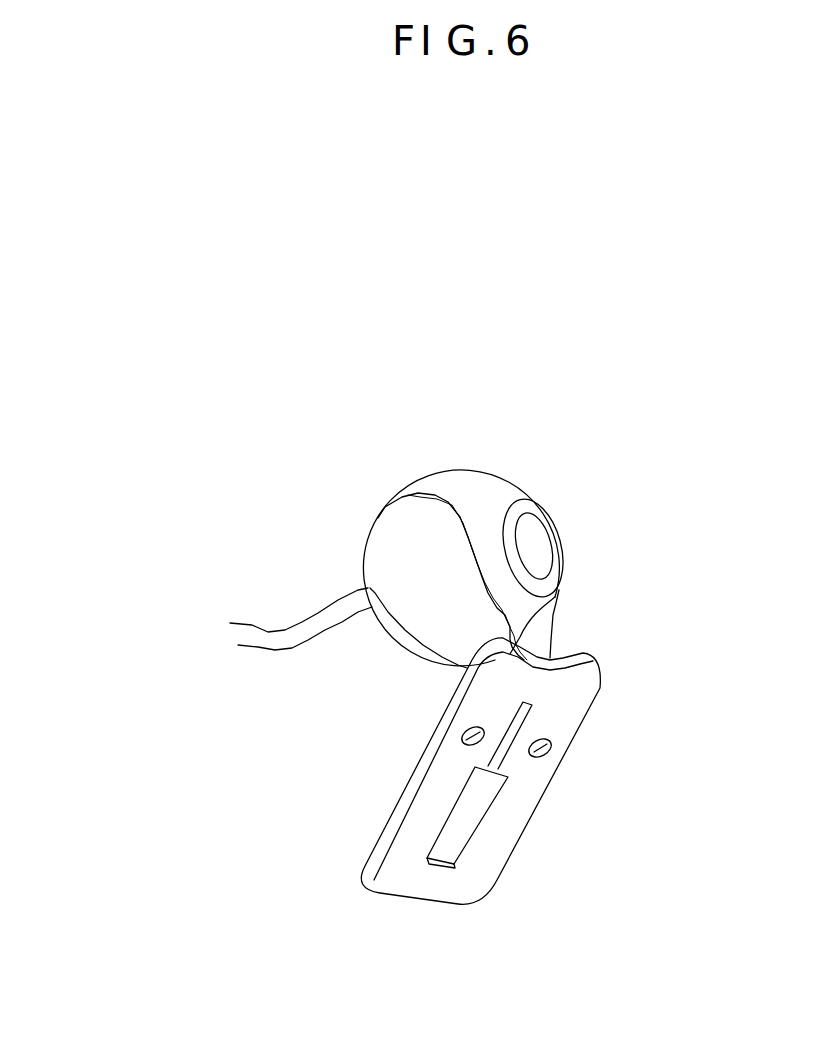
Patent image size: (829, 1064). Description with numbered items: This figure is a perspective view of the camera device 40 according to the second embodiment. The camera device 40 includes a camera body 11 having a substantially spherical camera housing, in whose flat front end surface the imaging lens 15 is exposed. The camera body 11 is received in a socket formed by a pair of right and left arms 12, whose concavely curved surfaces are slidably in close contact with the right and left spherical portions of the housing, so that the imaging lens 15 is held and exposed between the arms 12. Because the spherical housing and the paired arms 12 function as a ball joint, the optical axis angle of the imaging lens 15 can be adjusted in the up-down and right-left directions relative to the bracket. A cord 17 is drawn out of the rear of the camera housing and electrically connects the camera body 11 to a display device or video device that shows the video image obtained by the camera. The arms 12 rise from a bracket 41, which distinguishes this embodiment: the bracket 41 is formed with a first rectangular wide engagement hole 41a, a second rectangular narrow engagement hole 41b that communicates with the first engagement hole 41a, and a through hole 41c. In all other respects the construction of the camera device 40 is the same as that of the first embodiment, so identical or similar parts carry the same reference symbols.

The camera body 11 is at (456, 485).
The arms 12 is at (405, 507).
The imaging lens 15 is at (530, 542).
The cord 17 is at (262, 638).
The camera device 40 is at (647, 527).
The bracket 41 is at (578, 687).
The first rectangular wide engagement hole 41a is at (480, 818).
The second rectangular narrow engagement hole 41b is at (510, 758).
The through hole 41c is at (461, 733).